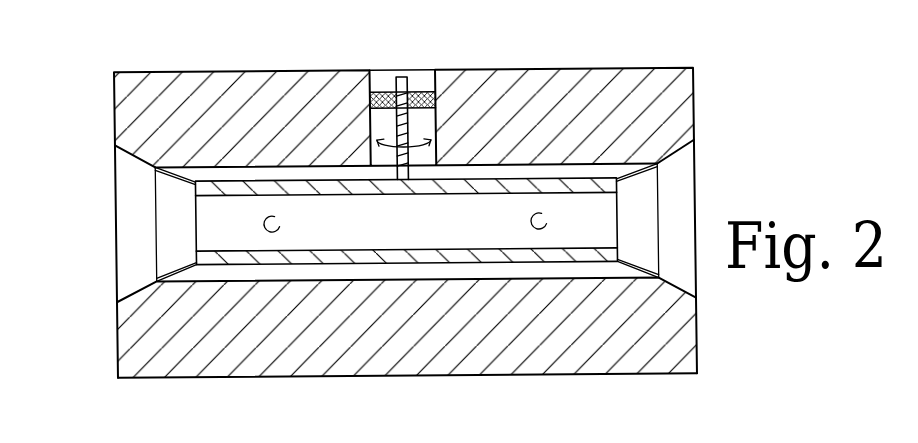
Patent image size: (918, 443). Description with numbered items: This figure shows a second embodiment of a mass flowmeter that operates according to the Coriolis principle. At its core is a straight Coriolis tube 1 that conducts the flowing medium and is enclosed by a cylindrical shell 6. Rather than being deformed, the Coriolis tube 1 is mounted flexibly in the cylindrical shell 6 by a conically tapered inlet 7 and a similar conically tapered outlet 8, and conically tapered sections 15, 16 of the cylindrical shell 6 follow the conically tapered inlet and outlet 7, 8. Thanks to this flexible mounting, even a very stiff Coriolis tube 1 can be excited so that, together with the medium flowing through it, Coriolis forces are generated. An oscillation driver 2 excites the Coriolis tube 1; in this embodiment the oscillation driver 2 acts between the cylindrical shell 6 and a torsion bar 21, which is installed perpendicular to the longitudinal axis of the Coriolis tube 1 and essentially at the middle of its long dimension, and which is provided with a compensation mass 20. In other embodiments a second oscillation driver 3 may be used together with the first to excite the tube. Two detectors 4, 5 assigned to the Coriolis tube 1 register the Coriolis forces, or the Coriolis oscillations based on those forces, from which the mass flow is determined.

The Coriolis tube 1 is at (590, 254).
The oscillation driver 2 is at (406, 303).
The oscillation driver 3 is at (406, 351).
The detector 4 is at (289, 226).
The detector 5 is at (549, 224).
The cylindrical shell 6 is at (629, 90).
The conically tapered inlet 7 is at (181, 188).
The conically tapered outlet 8 is at (634, 197).
The conically tapered section 15 is at (117, 170).
The conically tapered section 16 is at (694, 146).
The compensation mass 20 is at (421, 92).
The torsion bar 21 is at (400, 77).